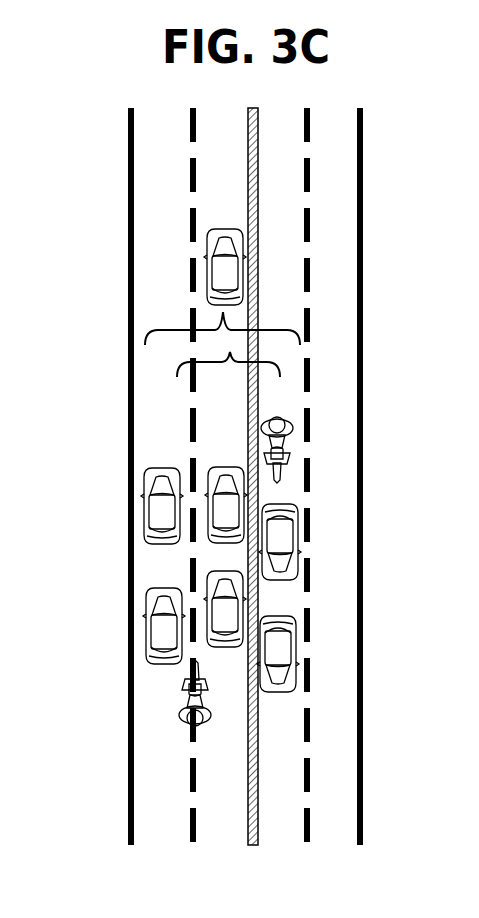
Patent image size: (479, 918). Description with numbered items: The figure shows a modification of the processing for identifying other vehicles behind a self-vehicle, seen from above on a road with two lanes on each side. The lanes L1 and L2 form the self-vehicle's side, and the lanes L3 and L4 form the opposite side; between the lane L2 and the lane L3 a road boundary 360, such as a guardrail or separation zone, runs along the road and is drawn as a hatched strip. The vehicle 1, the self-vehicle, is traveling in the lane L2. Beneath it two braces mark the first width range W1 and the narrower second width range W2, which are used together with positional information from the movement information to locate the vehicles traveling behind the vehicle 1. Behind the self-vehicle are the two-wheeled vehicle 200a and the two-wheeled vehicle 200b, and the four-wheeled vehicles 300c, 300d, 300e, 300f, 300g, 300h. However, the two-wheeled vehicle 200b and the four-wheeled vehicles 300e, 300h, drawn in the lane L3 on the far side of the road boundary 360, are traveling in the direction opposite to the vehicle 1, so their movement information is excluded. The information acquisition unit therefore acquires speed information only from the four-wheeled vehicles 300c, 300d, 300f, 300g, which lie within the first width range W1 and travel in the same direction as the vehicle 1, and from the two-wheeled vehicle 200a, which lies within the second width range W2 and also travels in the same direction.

The vehicle 1 is at (207, 252).
The road boundary 360 is at (253, 157).
The first width range W1 is at (163, 325).
The second width range W2 is at (175, 368).
The four-wheeled vehicle 300c is at (143, 484).
The four-wheeled vehicle 300d is at (208, 478).
The four-wheeled vehicle 300e is at (298, 537).
The four-wheeled vehicle 300f is at (145, 603).
The four-wheeled vehicle 300g is at (207, 583).
The four-wheeled vehicle 300h is at (295, 655).
The two-wheeled vehicle 200a is at (185, 678).
The two-wheeled vehicle 200b is at (287, 441).
The lane L1 is at (164, 817).
The lane L2 is at (224, 817).
The lane L3 is at (280, 817).
The lane L4 is at (334, 817).